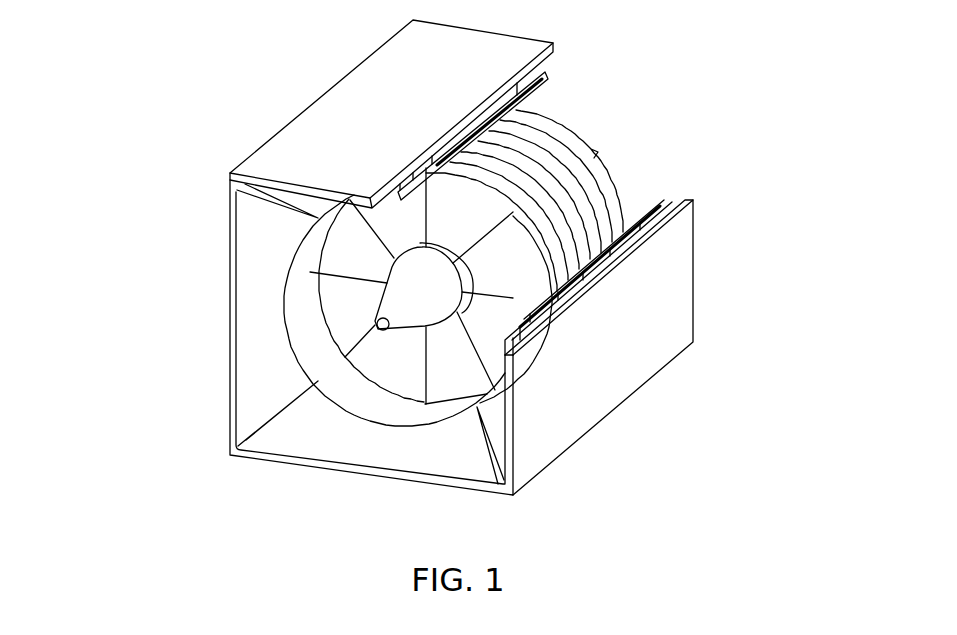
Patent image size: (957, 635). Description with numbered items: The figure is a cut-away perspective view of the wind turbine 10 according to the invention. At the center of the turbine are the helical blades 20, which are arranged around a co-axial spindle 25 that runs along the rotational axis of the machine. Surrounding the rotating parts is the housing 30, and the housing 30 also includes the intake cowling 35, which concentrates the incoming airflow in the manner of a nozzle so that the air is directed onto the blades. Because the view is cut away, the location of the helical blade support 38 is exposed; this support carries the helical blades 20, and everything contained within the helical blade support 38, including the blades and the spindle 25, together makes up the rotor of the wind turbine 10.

The wind turbine 10 is at (255, 90).
The helical blades 20 is at (535, 155).
The co-axial spindle 25 is at (400, 300).
The housing 30 is at (263, 143).
The intake cowling 35 is at (262, 378).
The helical blade support 38 is at (590, 275).